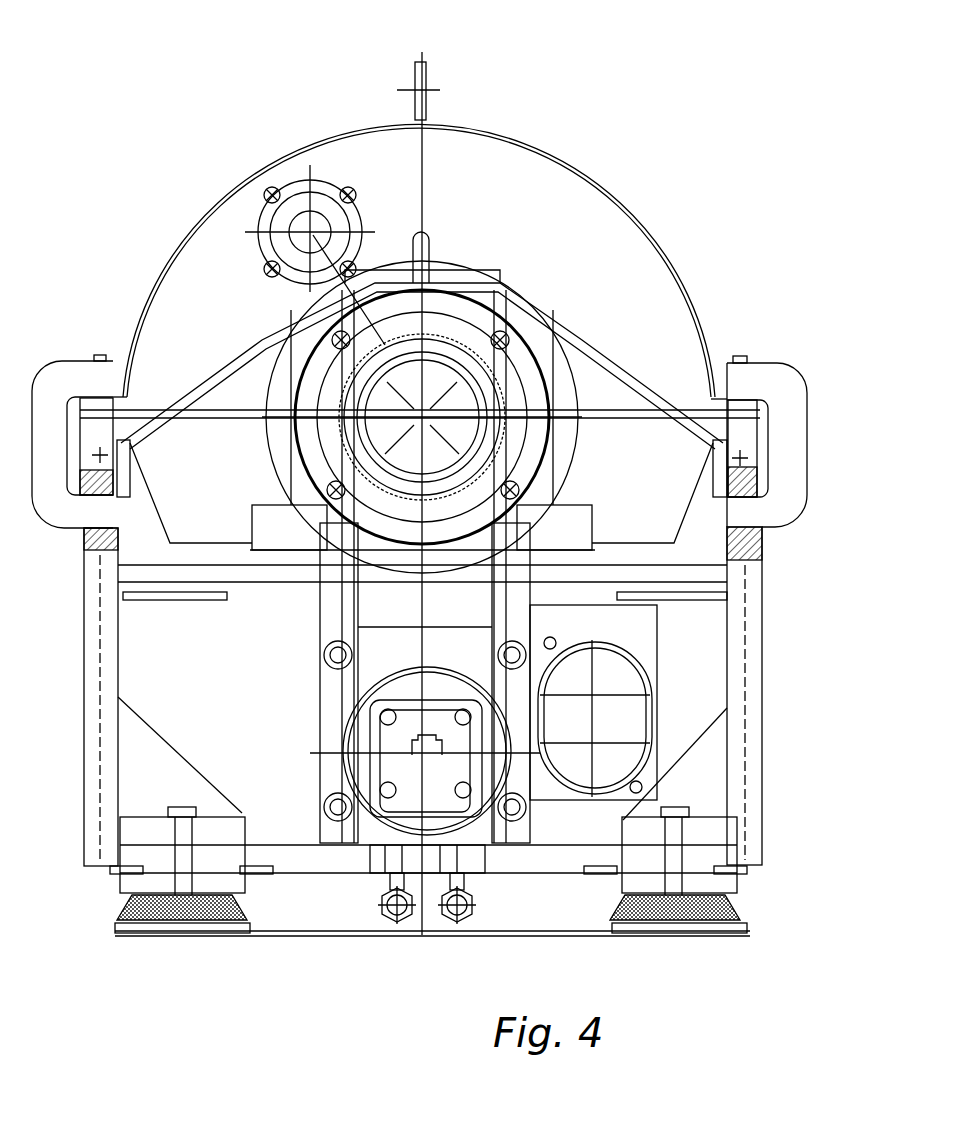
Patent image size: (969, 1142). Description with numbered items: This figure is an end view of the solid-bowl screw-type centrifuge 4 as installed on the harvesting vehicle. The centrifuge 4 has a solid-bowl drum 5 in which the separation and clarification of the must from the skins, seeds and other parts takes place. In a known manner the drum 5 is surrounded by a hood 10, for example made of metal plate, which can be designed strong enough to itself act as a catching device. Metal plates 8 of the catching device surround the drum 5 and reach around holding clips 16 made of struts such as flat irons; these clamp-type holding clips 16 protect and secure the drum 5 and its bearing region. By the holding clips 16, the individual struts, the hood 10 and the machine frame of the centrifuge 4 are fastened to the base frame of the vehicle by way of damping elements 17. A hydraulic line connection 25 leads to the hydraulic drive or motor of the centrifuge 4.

The hood 10 is at (352, 120).
The solid-bowl screw-type centrifuge 4 is at (552, 147).
The solid-bowl drum 5 is at (528, 330).
The metal plates 8 is at (228, 340).
The holding clips 16 is at (762, 356).
The damping elements 17 is at (247, 907).
The hydraulic line connection 25 is at (472, 880).